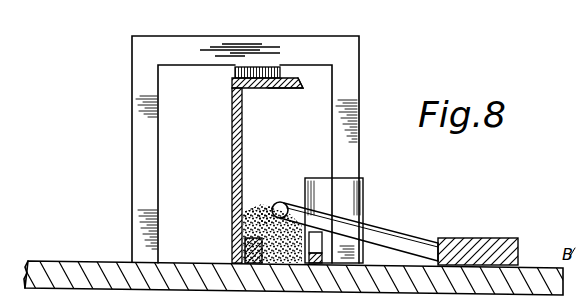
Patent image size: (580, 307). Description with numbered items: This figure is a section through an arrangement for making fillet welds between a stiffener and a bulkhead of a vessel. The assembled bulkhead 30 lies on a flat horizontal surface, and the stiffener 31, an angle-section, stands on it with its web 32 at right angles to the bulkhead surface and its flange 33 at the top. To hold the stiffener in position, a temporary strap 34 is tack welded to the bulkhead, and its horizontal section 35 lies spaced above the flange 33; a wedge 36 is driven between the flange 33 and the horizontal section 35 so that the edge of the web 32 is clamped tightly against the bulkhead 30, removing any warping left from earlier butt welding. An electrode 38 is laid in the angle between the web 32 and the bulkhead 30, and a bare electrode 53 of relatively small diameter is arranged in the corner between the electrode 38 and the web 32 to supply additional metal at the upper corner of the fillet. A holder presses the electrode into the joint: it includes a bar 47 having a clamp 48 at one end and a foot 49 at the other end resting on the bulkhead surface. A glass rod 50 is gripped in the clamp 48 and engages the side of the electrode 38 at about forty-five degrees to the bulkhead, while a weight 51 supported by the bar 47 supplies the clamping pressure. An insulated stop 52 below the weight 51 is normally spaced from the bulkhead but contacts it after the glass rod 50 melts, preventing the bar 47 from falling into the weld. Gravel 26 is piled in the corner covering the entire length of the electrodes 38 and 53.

The bulkhead 30 is at (72, 242).
The temporary strap 34 is at (148, 134).
The horizontal section of strap 35 is at (196, 52).
The wedge 36 is at (262, 68).
The stiffener 31 is at (232, 84).
The web 32 is at (232, 136).
The flange 33 is at (272, 89).
The gravel 26 is at (248, 206).
The bare electrode 53 is at (237, 215).
The glass rod 50 is at (256, 213).
The electrode 38 is at (234, 240).
The clamp 48 is at (282, 200).
The bar 47 is at (375, 236).
The weight 51 is at (365, 196).
The insulated stop 52 is at (324, 257).
The foot 49 is at (472, 250).